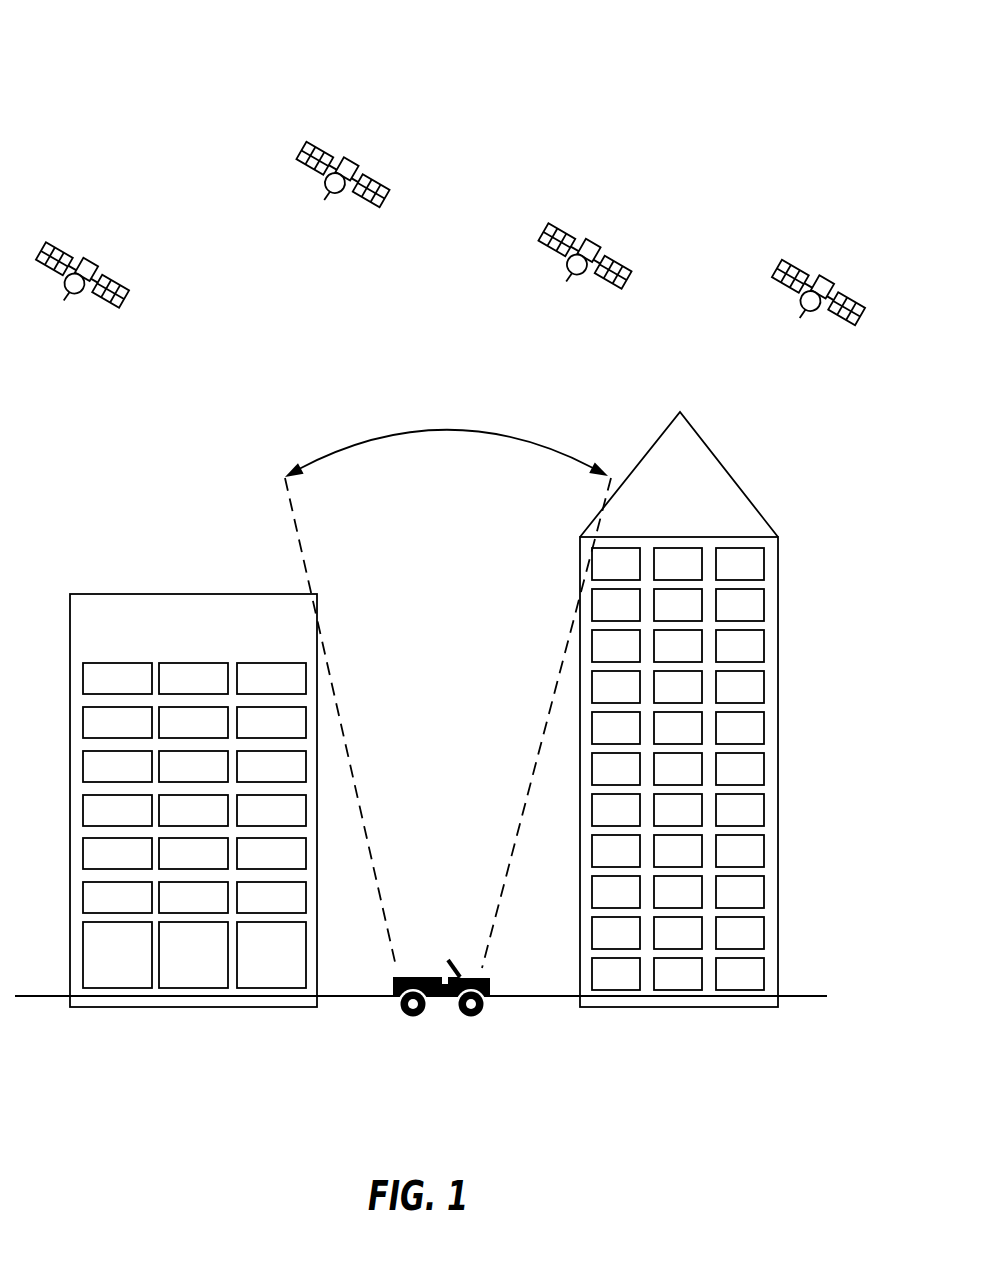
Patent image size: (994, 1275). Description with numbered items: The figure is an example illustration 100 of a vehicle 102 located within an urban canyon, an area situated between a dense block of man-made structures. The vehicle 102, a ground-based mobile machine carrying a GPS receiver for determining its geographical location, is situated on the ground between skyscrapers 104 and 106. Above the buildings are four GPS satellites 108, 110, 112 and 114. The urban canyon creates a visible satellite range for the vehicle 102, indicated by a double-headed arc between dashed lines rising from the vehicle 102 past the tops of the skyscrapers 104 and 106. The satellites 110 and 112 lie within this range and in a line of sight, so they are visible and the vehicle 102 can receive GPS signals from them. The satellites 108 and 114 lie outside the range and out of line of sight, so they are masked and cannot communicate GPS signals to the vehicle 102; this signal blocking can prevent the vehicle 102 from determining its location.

The illustration 100 is at (168, 57).
The vehicle 102 is at (409, 968).
The skyscraper 104 is at (105, 594).
The skyscraper 106 is at (727, 471).
The satellite 108 is at (80, 253).
The satellite 110 is at (340, 157).
The satellite 112 is at (585, 237).
The satellite 114 is at (817, 272).